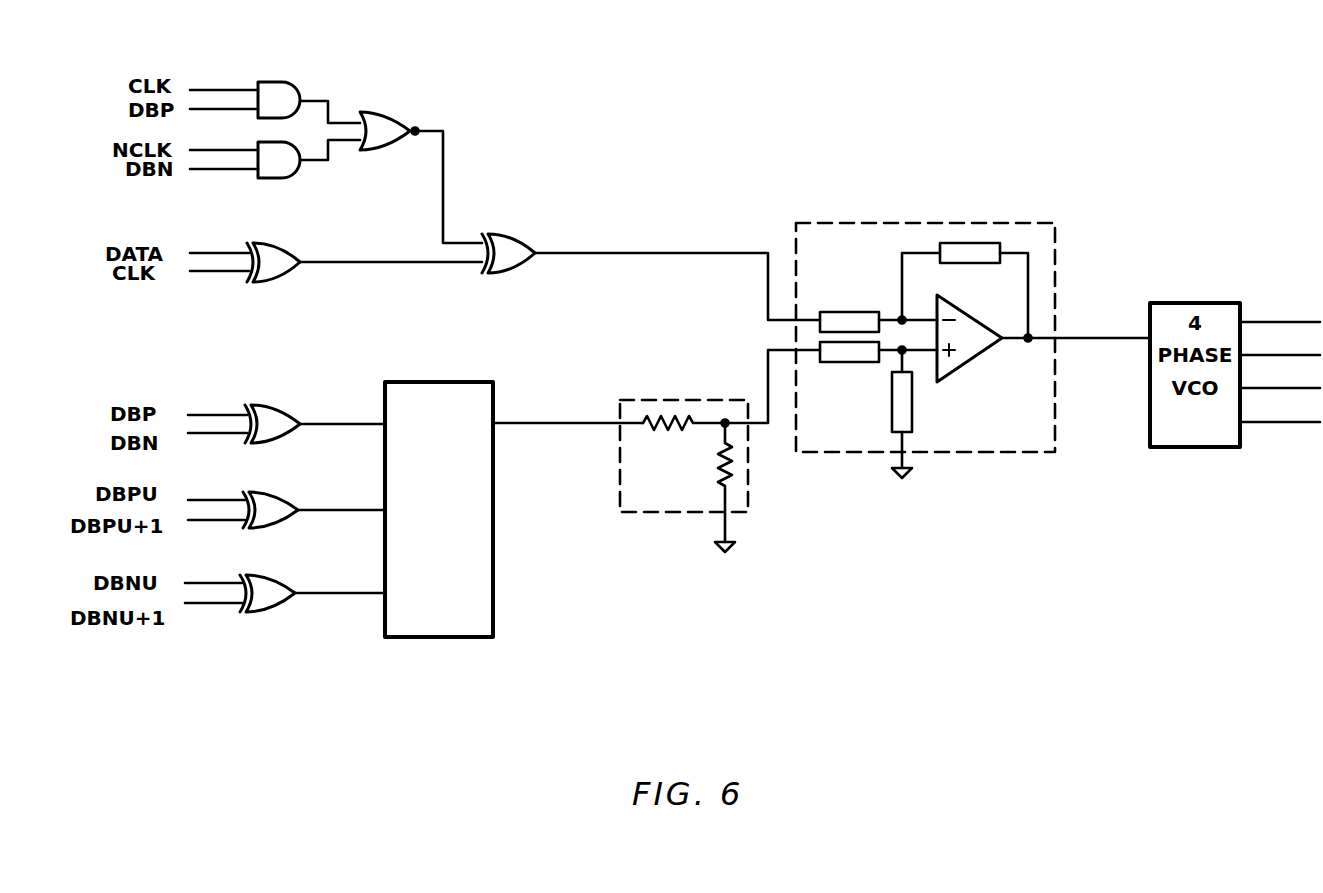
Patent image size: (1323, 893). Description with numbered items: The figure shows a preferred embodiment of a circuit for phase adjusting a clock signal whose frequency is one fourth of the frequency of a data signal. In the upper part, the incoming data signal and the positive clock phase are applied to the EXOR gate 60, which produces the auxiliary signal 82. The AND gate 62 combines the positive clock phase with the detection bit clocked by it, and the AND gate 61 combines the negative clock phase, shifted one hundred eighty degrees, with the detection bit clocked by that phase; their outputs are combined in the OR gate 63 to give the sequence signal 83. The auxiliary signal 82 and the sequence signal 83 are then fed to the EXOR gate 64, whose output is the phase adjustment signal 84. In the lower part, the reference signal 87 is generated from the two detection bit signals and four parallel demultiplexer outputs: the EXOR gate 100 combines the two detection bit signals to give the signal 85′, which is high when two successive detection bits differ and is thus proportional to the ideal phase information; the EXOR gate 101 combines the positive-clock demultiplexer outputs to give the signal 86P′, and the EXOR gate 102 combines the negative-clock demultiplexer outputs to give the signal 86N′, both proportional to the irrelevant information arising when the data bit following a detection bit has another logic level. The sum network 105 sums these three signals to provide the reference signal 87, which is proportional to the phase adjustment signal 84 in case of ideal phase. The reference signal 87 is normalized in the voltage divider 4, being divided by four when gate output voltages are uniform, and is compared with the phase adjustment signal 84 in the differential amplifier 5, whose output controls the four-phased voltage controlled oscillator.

The voltage divider 4 is at (658, 516).
The differential amplifier 5 is at (849, 222).
The EXOR gate 60 is at (276, 270).
The AND gate 61 is at (288, 170).
The AND gate 62 is at (290, 96).
The OR gate 63 is at (386, 126).
The EXOR gate 64 is at (516, 245).
The auxiliary signal 82 is at (409, 266).
The sequence signal 83 is at (444, 186).
The phase adjustment signal 84 is at (688, 253).
The signal proportional to ideal phase information 85′ is at (334, 421).
The signal proportional to irrelevant information 86P′ is at (360, 512).
The signal proportional to irrelevant information 86N′ is at (340, 596).
The reference signal 87 is at (536, 421).
The EXOR gate 100 is at (263, 405).
The EXOR gate 101 is at (290, 493).
The EXOR gate 102 is at (289, 570).
The sum network 105 is at (437, 640).